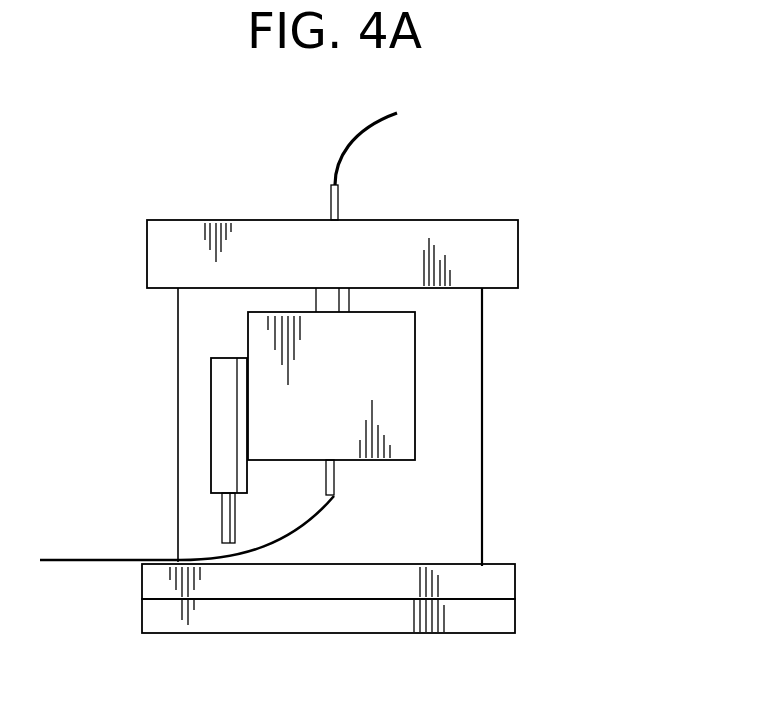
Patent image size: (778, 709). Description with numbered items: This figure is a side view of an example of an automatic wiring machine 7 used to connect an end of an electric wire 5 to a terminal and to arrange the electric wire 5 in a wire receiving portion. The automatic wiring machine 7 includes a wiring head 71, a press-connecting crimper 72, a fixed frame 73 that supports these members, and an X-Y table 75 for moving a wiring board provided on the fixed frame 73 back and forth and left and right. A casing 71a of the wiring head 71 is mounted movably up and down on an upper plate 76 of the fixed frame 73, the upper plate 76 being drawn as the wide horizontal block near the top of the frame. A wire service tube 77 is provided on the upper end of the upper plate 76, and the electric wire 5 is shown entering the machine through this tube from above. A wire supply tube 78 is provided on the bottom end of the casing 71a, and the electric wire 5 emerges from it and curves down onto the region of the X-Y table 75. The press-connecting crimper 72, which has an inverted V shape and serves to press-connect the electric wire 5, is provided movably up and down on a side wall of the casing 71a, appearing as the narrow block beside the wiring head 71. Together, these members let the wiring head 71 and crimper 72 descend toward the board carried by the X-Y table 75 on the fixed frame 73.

The electric wire 5 is at (353, 135).
The automatic wiring machine 7 is at (601, 248).
The wiring head 71 is at (417, 372).
The casing 71a is at (398, 418).
The press-connecting crimper 72 is at (222, 518).
The fixed frame 73 is at (490, 628).
The X-Y table 75 is at (505, 580).
The upper plate 76 is at (485, 237).
The wire service tube 77 is at (329, 205).
The wire supply tube 78 is at (335, 482).